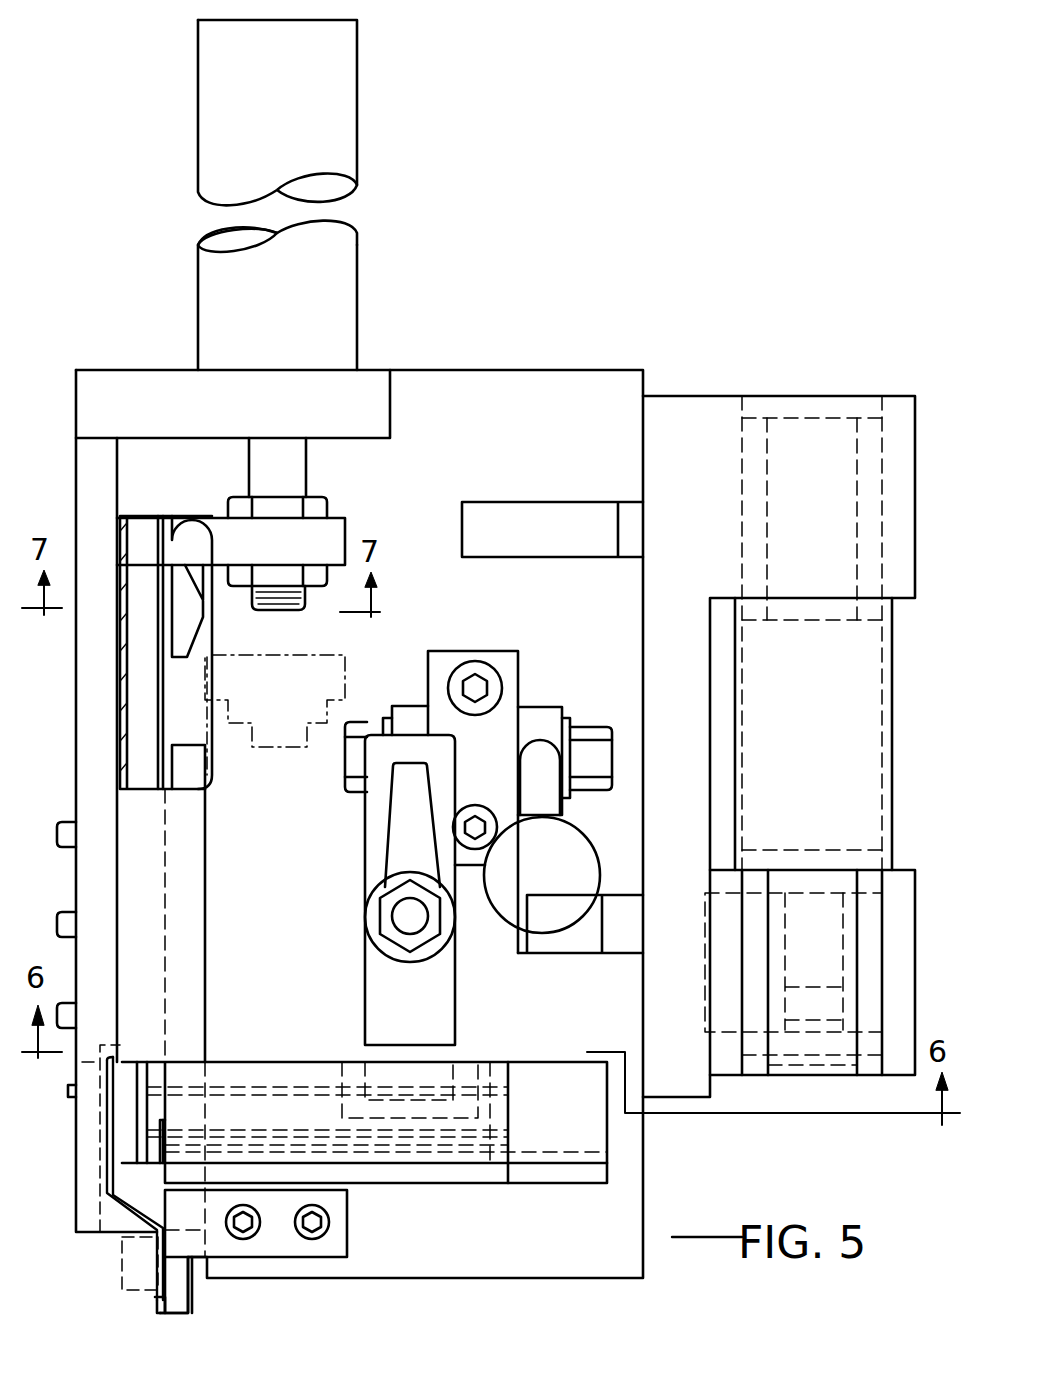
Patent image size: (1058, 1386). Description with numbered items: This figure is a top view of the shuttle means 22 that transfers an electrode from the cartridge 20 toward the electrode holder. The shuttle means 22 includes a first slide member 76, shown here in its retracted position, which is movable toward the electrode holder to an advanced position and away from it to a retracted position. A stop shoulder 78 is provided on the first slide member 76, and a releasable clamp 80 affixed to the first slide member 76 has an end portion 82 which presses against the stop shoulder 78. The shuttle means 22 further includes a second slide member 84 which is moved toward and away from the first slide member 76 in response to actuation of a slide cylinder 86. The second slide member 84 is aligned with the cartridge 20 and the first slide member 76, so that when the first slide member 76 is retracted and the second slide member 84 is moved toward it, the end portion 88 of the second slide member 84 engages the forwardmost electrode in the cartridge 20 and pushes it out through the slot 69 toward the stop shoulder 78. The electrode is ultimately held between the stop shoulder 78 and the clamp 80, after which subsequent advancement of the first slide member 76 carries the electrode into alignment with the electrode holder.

The cartridge 20 is at (535, 1080).
The shuttle means 22 is at (418, 170).
The slot 69 is at (165, 1127).
The first slide member 76 is at (451, 1250).
The stop shoulder 78 is at (180, 1300).
The releasable clamp 80 is at (128, 1236).
The end portion 82 is at (155, 1302).
The second slide member 84 is at (140, 698).
The slide cylinder 86 is at (228, 76).
The end portion 88 is at (122, 1272).